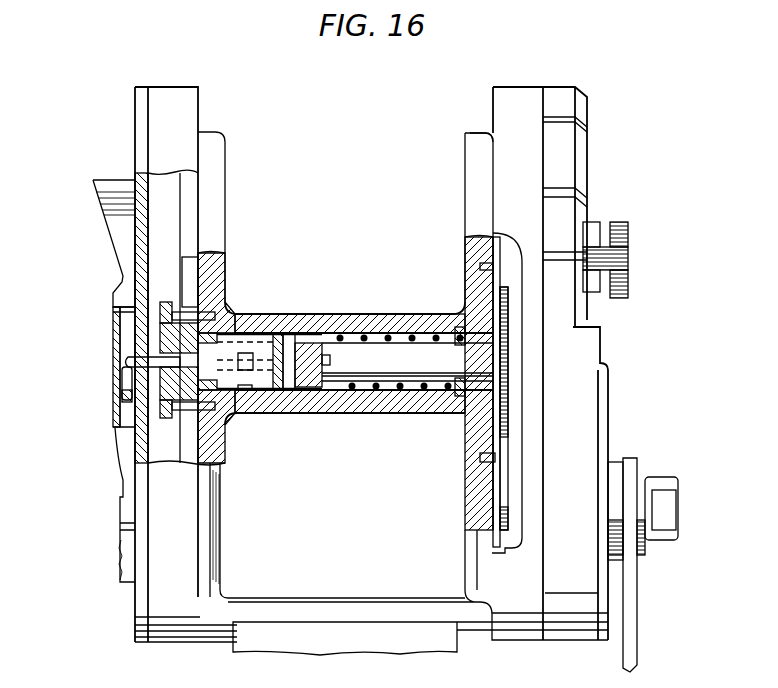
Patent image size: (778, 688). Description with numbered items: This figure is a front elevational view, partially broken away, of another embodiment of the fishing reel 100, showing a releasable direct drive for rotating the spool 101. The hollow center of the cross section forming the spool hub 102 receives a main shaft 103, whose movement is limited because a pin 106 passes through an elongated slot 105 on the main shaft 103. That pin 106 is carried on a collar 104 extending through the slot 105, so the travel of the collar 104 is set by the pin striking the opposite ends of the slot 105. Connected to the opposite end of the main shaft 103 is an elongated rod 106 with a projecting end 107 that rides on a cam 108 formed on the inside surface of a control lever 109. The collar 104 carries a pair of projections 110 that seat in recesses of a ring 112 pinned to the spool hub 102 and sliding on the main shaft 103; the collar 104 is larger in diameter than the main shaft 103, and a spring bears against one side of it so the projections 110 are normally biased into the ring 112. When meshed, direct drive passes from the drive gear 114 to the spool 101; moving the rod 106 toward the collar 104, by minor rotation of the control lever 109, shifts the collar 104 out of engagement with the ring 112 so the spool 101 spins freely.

The fishing reel 100 is at (365, 212).
The spool 101 is at (233, 295).
The spool hub 102 is at (393, 314).
The main shaft 103 is at (407, 362).
The collar 104 is at (264, 392).
The elongated slot 105 is at (298, 340).
The pin / elongated rod 106 is at (178, 362).
The projecting end 107 is at (119, 366).
The cam 108 is at (122, 391).
The control lever 109 is at (113, 323).
The projections 110 is at (247, 357).
The ring 112 is at (245, 400).
The drive gear 114 is at (500, 420).